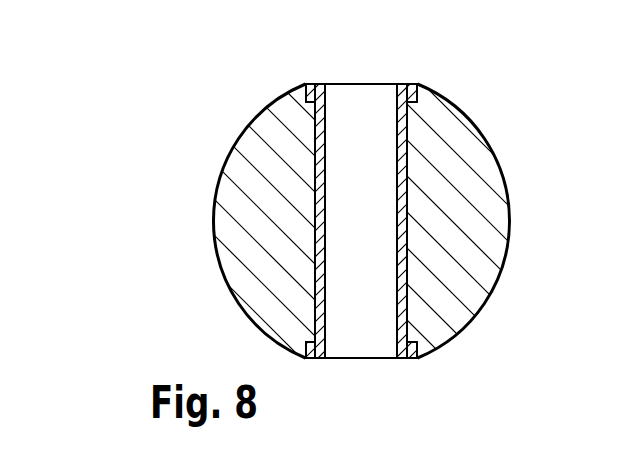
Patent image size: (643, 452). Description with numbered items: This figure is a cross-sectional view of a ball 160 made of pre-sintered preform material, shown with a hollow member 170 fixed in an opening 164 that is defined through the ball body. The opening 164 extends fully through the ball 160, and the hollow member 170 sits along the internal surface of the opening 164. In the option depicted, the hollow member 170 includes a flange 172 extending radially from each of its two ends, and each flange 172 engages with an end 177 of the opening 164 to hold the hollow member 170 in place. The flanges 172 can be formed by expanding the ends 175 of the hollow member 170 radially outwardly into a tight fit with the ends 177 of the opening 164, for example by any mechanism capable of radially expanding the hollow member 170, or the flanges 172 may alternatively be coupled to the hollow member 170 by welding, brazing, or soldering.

The ball 160 is at (473, 185).
The opening 164 is at (410, 266).
The hollow member 170 is at (403, 120).
The flange 172 is at (315, 84).
The end 175 is at (341, 84).
The end 177 is at (307, 102).